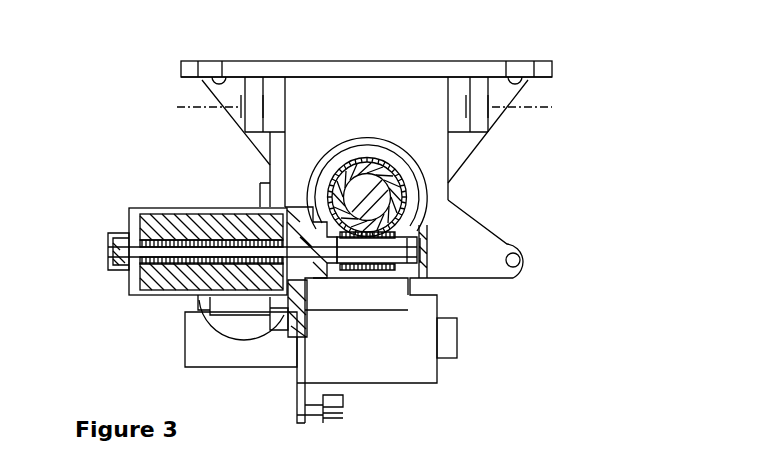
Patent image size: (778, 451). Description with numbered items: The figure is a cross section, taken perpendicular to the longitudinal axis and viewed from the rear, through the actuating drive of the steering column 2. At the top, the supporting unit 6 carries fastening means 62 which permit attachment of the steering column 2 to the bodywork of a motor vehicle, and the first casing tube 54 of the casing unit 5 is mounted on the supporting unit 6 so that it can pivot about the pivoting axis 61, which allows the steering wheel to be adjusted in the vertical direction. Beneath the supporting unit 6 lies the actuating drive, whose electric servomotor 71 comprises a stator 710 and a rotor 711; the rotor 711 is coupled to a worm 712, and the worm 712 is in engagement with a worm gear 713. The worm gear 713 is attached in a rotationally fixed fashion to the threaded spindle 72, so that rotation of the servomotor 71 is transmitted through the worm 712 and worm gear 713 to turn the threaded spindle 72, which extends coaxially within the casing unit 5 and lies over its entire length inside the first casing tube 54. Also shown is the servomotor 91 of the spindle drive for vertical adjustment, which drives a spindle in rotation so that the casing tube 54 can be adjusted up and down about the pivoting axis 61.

The steering column 2 is at (335, 36).
The casing unit 5 is at (435, 148).
The supporting unit 6 is at (409, 68).
The first casing tube 54 is at (413, 178).
The pivoting axis 61 is at (548, 100).
The fastening means 62 is at (208, 70).
The electric servomotor 71 is at (130, 218).
The threaded spindle 72 is at (358, 196).
The servomotor 91 is at (425, 367).
The stator 710 is at (123, 273).
The rotor 711 is at (160, 270).
The worm 712 is at (378, 280).
The worm gear 713 is at (410, 200).